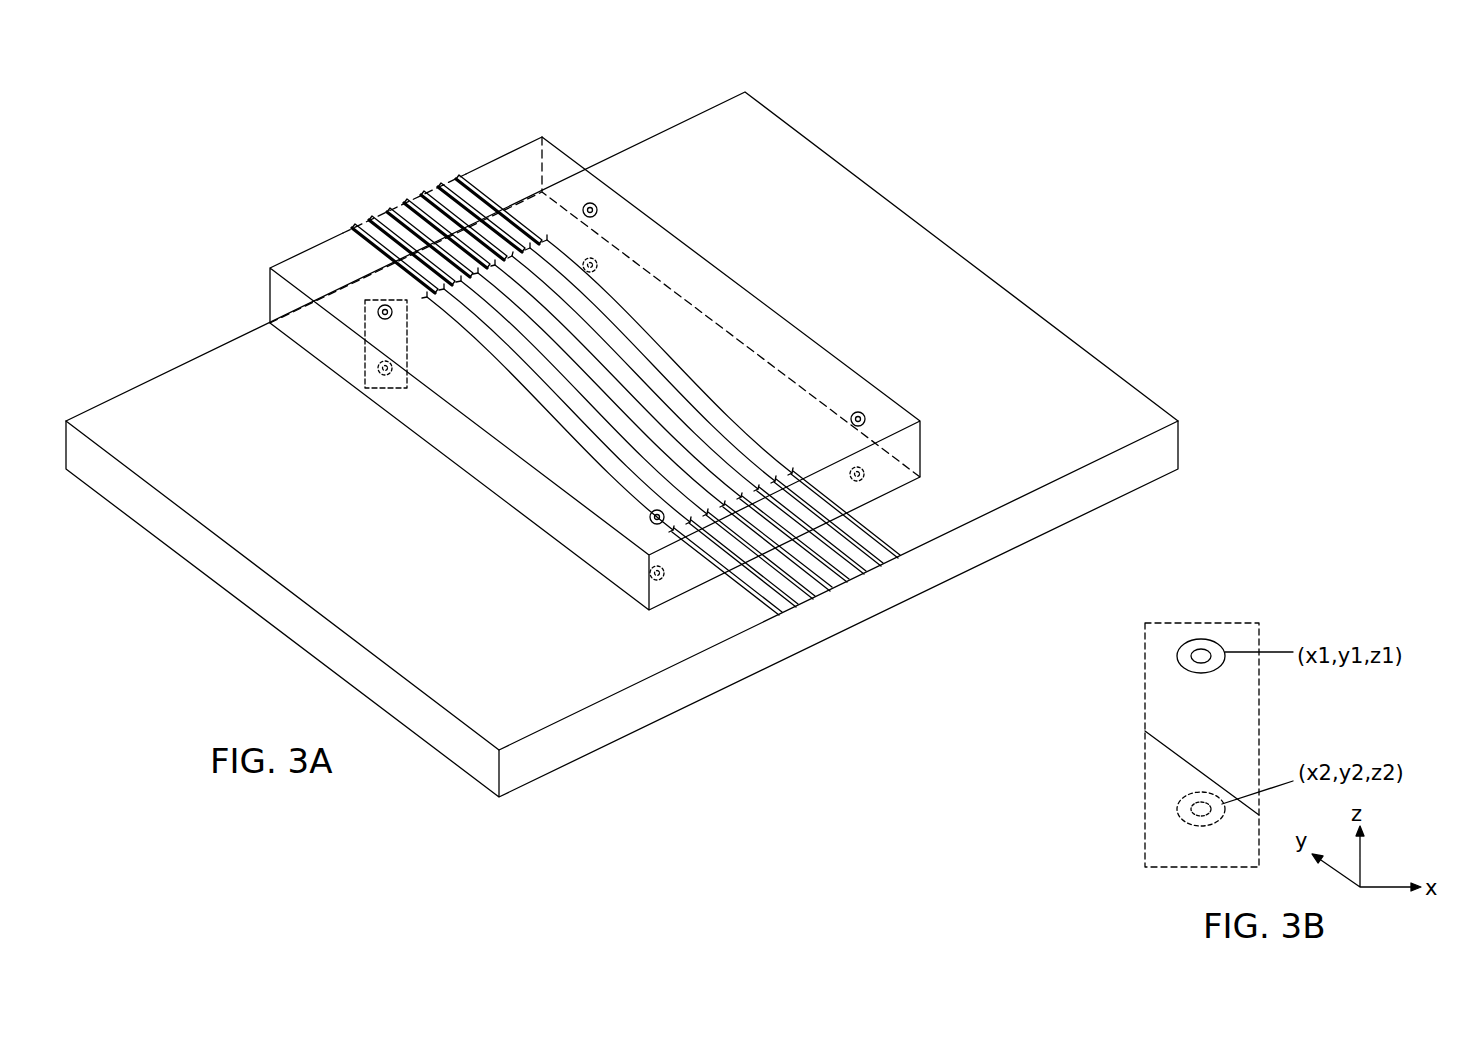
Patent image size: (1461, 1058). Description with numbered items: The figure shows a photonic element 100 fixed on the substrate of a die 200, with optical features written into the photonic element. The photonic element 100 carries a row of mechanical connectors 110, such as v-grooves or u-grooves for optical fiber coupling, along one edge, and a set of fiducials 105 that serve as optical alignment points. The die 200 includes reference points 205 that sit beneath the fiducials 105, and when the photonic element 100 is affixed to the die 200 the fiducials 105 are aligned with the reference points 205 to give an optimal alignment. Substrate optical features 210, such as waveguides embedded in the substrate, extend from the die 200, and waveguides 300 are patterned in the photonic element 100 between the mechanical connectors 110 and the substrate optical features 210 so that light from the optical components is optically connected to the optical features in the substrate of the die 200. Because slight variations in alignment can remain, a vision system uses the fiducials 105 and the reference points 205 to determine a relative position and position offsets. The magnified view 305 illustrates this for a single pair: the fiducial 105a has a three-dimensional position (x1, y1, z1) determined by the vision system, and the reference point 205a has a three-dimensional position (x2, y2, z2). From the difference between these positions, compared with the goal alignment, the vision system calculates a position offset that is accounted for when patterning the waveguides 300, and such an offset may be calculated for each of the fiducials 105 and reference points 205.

In FIG. 3A, the photonic element 100 is at (543, 137).
In FIG. 3A, the fiducials 105 is at (597, 207).
In FIG. 3A, the mechanical connectors 110 is at (330, 238).
In FIG. 3A, the die 200 is at (1025, 410).
In FIG. 3A, the reference points 205 is at (597, 265).
In FIG. 3A, the substrate optical features 210 is at (755, 597).
In FIG. 3A, the waveguides 300 is at (690, 378).
In FIG. 3A, the magnified view 305 is at (365, 352).
In FIG. 3B, the fiducial 105a is at (1178, 646).
In FIG. 3B, the reference point 205a is at (1185, 800).